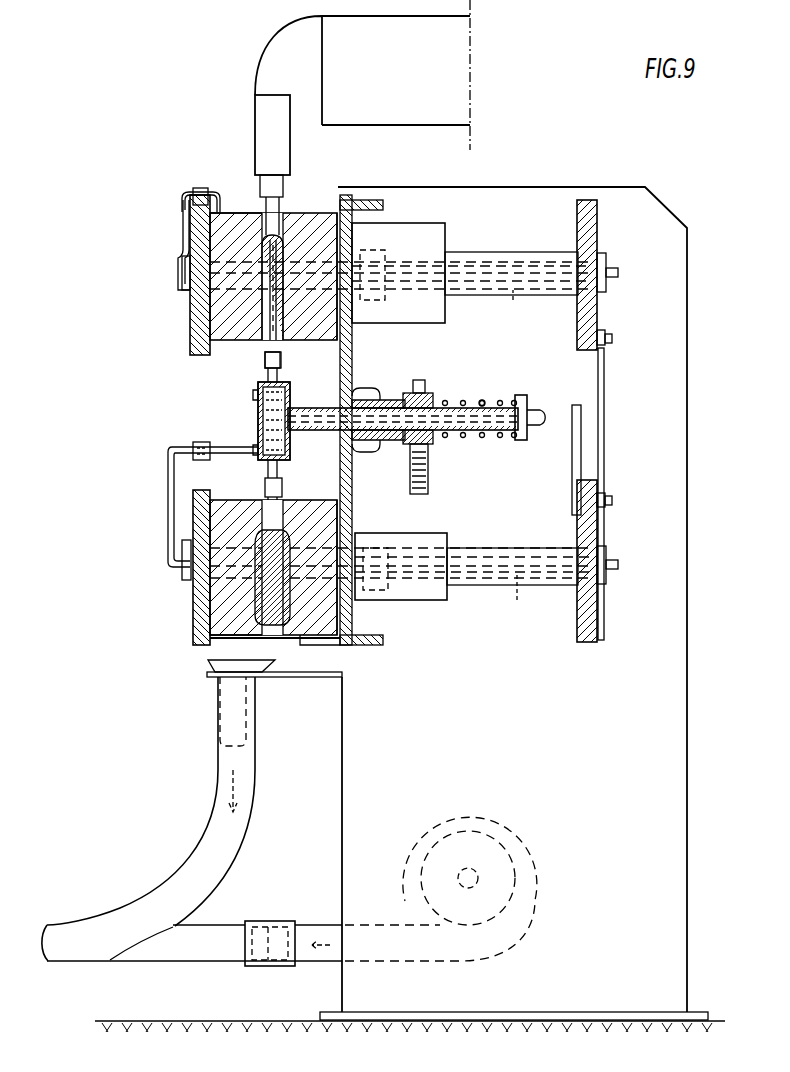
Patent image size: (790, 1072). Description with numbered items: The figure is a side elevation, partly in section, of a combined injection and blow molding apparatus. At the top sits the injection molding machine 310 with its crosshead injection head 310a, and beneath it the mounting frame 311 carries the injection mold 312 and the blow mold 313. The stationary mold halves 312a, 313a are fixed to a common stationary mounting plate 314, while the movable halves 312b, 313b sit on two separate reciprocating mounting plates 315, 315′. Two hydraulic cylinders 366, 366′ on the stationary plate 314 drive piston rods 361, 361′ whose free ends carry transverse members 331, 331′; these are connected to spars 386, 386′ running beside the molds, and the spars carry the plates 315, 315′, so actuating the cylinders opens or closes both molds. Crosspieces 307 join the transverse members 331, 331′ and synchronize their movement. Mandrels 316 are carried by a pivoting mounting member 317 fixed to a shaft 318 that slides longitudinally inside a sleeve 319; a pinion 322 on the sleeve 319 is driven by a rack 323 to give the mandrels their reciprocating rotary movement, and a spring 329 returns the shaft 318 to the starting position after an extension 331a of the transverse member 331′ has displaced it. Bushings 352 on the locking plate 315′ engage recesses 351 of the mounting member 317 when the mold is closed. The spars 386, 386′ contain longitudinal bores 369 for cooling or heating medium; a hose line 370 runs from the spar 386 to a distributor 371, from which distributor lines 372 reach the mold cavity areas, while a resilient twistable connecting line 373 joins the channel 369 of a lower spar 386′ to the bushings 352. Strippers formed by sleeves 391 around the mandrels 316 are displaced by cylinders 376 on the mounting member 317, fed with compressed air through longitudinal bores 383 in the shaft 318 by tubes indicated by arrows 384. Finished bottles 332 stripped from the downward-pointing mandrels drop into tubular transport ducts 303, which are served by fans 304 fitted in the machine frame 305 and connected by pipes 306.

The tubular transport duct 303 is at (198, 834).
The fan 304 is at (528, 840).
The machine frame 305 is at (688, 771).
The pipe 306 is at (217, 963).
The crosspiece 307 is at (604, 360).
The injection molding machine 310 is at (400, 125).
The crosshead injection head 310a is at (290, 128).
The mounting frame 311 is at (154, 376).
The injection mold 312 is at (226, 350).
The injection mold half 312a is at (304, 213).
The injection mold half 312b is at (229, 213).
The blow mold 313 is at (230, 661).
The blow mold half 313a is at (330, 640).
The blow mold half 313b is at (222, 624).
The stationary mounting plate 314 is at (353, 522).
The mounting plate 315 is at (194, 227).
The mounting plate 315′ is at (196, 616).
The mandrel 316 is at (268, 294).
The pivoting mounting member 317 is at (268, 350).
The shaft 318 is at (360, 398).
The sleeve 319 is at (386, 408).
The pinion 322 is at (422, 393).
The rack 323 is at (419, 379).
The spring 329 is at (486, 400).
The transverse member 331 is at (596, 214).
The extension 331a is at (581, 437).
The transverse member 331′ is at (598, 532).
The bottle 332 is at (246, 738).
The recess 351 is at (258, 436).
The bushing 352 is at (216, 442).
The piston rod 361 is at (468, 252).
The piston rod 361′ is at (488, 534).
The hydraulic cylinder 366 is at (425, 236).
The hydraulic cylinder 366′ is at (428, 522).
The longitudinal bore 369 is at (513, 300).
The connecting line 370 is at (182, 240).
The distributor 371 is at (200, 190).
The distributor line 372 is at (190, 200).
The resilient twistable connecting line 373 is at (168, 541).
The cylinder 376 is at (290, 412).
The longitudinal bore 383 is at (472, 455).
The arrow 384 is at (540, 392).
The spar 386 is at (493, 262).
The spar 386′ is at (526, 556).
The sleeve 391 is at (282, 357).